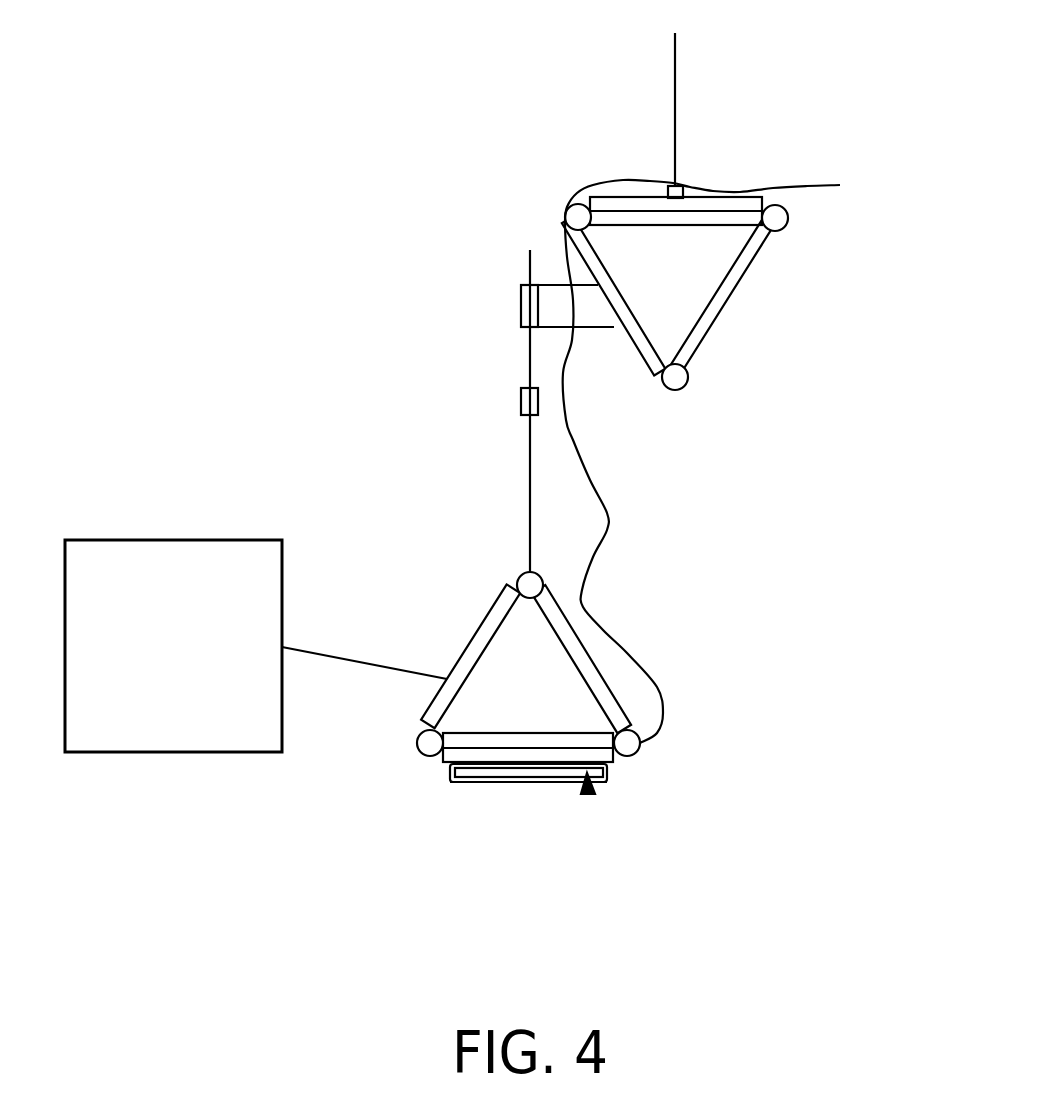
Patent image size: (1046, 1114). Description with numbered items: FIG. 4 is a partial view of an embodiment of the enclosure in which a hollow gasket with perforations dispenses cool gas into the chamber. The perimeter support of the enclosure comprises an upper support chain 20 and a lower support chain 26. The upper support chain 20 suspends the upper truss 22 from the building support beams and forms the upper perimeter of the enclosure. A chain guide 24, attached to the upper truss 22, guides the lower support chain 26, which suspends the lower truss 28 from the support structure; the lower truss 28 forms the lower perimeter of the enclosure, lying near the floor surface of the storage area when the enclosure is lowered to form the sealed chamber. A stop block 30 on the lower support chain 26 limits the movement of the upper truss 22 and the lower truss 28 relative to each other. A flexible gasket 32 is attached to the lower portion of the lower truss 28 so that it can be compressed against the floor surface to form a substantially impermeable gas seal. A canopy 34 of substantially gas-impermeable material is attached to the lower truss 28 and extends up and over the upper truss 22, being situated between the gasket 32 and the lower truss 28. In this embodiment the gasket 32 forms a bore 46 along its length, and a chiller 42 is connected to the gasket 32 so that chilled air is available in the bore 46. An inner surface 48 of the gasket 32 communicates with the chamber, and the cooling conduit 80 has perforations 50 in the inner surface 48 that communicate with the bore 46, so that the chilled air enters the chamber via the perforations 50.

The upper support chain 20 is at (673, 102).
The upper truss 22 is at (737, 290).
The chain guide 24 is at (520, 307).
The lower support chain 26 is at (529, 464).
The lower truss 28 is at (457, 658).
The stop block 30 is at (520, 403).
The gasket 32 is at (555, 783).
The canopy 34 is at (607, 632).
The chiller 42 is at (190, 662).
The bore 46 is at (488, 775).
The inner surface 48 is at (607, 778).
The perforations 50 is at (603, 767).
The cooling conduit 80 is at (590, 794).